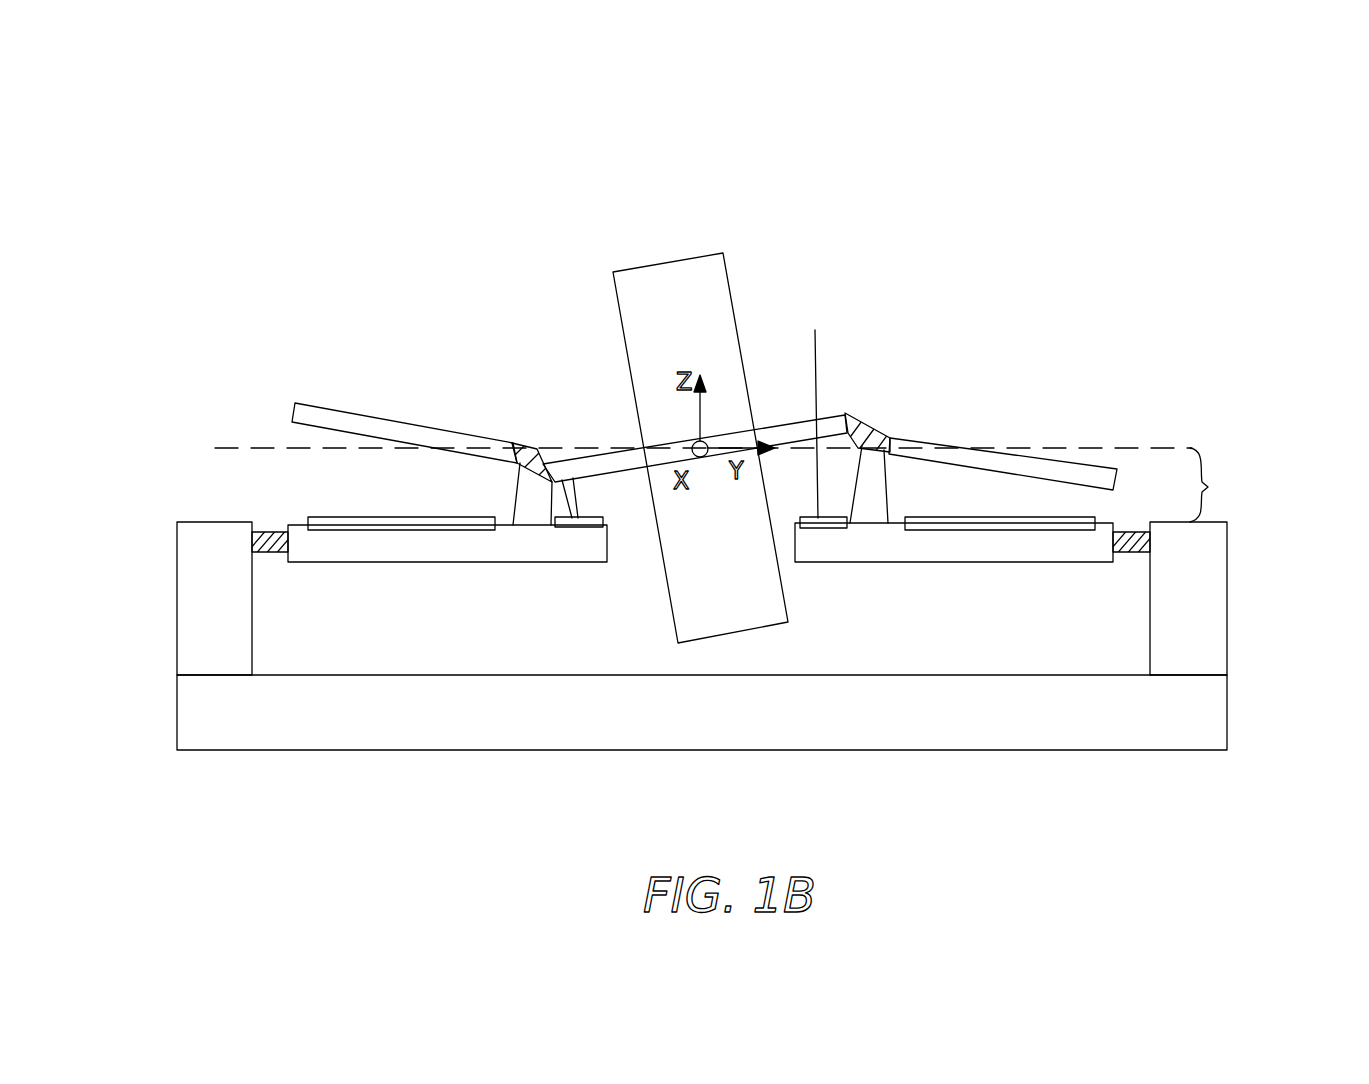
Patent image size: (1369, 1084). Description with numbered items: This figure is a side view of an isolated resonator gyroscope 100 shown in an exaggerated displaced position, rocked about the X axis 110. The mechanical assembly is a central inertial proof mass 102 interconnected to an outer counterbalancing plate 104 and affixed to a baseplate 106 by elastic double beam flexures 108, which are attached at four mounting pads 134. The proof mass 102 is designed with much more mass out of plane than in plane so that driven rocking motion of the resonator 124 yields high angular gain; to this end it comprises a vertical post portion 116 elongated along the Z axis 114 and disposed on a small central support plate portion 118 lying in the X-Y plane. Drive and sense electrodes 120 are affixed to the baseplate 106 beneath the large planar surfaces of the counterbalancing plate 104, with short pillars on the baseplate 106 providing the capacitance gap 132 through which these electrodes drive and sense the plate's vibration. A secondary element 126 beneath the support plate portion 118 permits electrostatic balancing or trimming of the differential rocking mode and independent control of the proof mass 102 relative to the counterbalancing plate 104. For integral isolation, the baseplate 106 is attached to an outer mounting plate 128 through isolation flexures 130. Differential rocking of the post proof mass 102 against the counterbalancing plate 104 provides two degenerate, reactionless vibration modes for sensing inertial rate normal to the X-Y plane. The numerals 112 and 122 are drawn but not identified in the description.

The isolated resonator gyroscope 100 is at (1110, 183).
The central inertial proof mass 102 is at (806, 288).
The counterbalancing plate 104 is at (293, 406).
The baseplate 106 is at (298, 525).
The double beam flexures 108 is at (753, 415).
The X axis 110 is at (668, 478).
The mirror 112 is at (738, 484).
The Z axis 114 is at (670, 380).
The vertical post portion 116 is at (663, 263).
The central support plate portion 118 is at (843, 417).
The drive and sense electrodes 120 is at (305, 516).
The hinge 122 is at (512, 443).
The resonator 124 is at (461, 274).
The secondary element 126 is at (573, 478).
The outer mounting plate 128 is at (177, 600).
The isolation flexures 130 is at (268, 553).
The capacitance gap 132 is at (1224, 485).
The mounting pads 134 is at (513, 505).